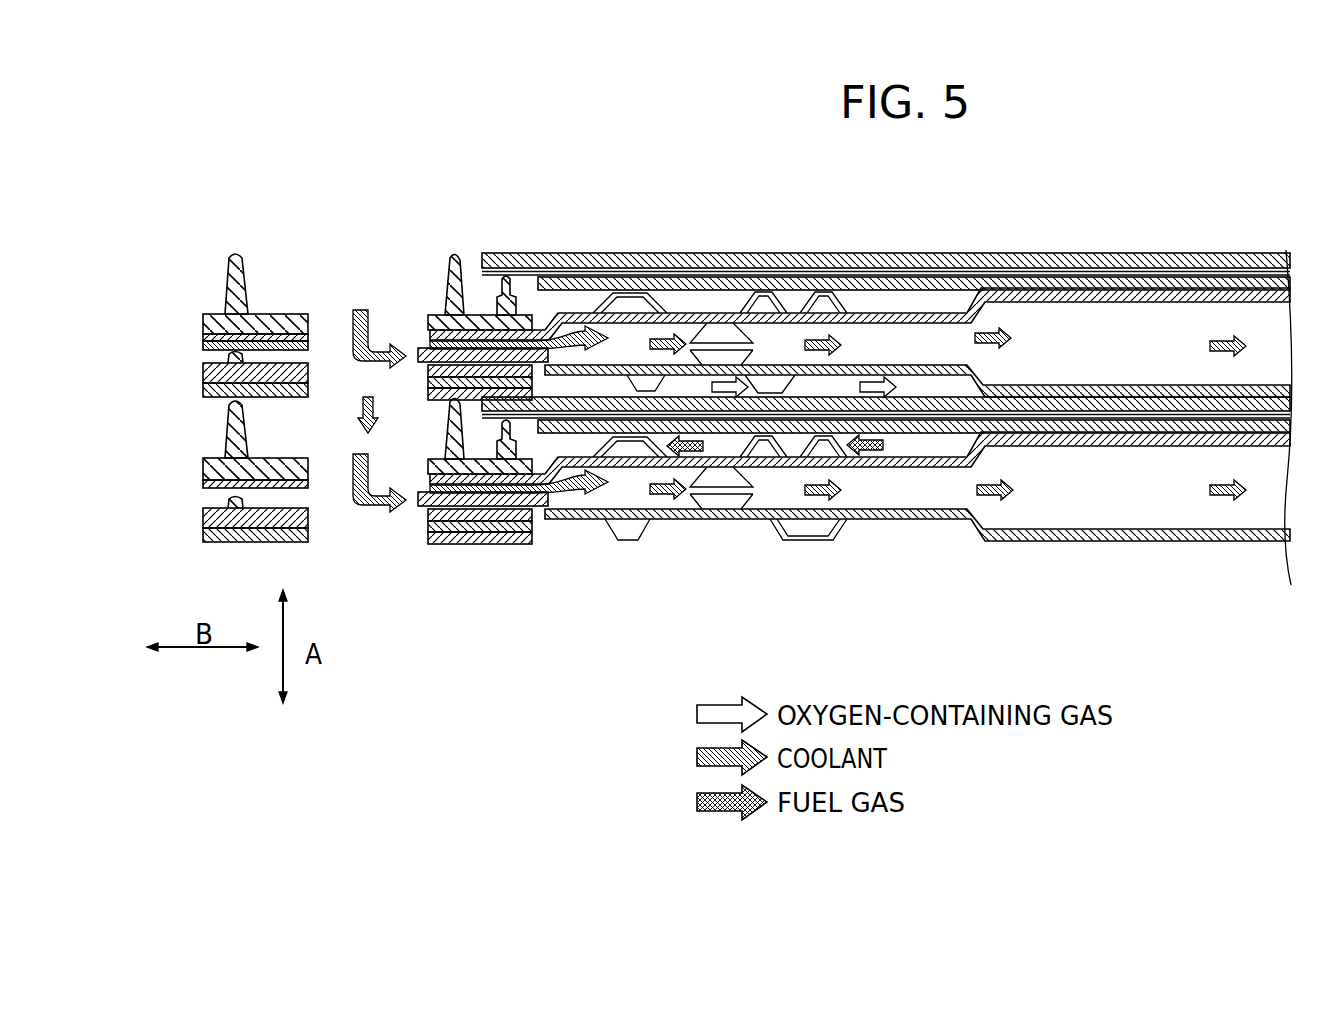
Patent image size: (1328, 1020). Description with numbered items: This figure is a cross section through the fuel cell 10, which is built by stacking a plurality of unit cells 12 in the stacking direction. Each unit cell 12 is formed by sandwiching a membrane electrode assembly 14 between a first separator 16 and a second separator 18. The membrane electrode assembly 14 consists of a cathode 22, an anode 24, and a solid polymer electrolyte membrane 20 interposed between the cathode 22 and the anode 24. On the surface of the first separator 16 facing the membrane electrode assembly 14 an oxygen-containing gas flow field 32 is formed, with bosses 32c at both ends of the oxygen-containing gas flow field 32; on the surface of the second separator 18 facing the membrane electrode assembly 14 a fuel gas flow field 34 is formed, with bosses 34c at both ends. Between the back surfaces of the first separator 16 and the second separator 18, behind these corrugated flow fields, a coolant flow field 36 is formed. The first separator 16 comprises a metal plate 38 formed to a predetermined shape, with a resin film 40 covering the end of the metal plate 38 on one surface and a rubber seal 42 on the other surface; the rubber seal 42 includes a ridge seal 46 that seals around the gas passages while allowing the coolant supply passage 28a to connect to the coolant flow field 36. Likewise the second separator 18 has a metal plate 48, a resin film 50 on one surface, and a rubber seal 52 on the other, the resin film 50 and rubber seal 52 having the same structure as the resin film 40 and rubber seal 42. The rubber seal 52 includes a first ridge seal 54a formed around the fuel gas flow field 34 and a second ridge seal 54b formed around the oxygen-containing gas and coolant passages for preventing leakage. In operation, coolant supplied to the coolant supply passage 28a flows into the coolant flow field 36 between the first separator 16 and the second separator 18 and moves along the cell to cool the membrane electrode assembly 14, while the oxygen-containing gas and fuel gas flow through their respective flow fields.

The fuel cell 10 is at (708, 129).
The unit cell 12 is at (845, 198).
The membrane electrode assembly 14 is at (695, 392).
The first separator 16 is at (637, 357).
The second separator 18 is at (762, 451).
The solid polymer electrolyte membrane 20 is at (1172, 414).
The cathode 22 is at (1131, 403).
The anode 24 is at (1210, 424).
The coolant supply passage 28a is at (383, 313).
The oxygen-containing gas flow field 32 is at (922, 387).
The bosses 32c is at (598, 292).
The fuel gas flow field 34 is at (905, 443).
The bosses 34c is at (627, 455).
The coolant flow field 36 is at (838, 417).
The metal plate 38 is at (953, 378).
The resin film 40 is at (200, 398).
The rubber seal 42 is at (200, 372).
The ridge seal 46 is at (243, 357).
The metal plate 48 is at (940, 467).
The resin film 50 is at (200, 493).
The rubber seal 52 is at (200, 470).
The first ridge seal 54a is at (447, 400).
The second ridge seal 54b is at (243, 417).